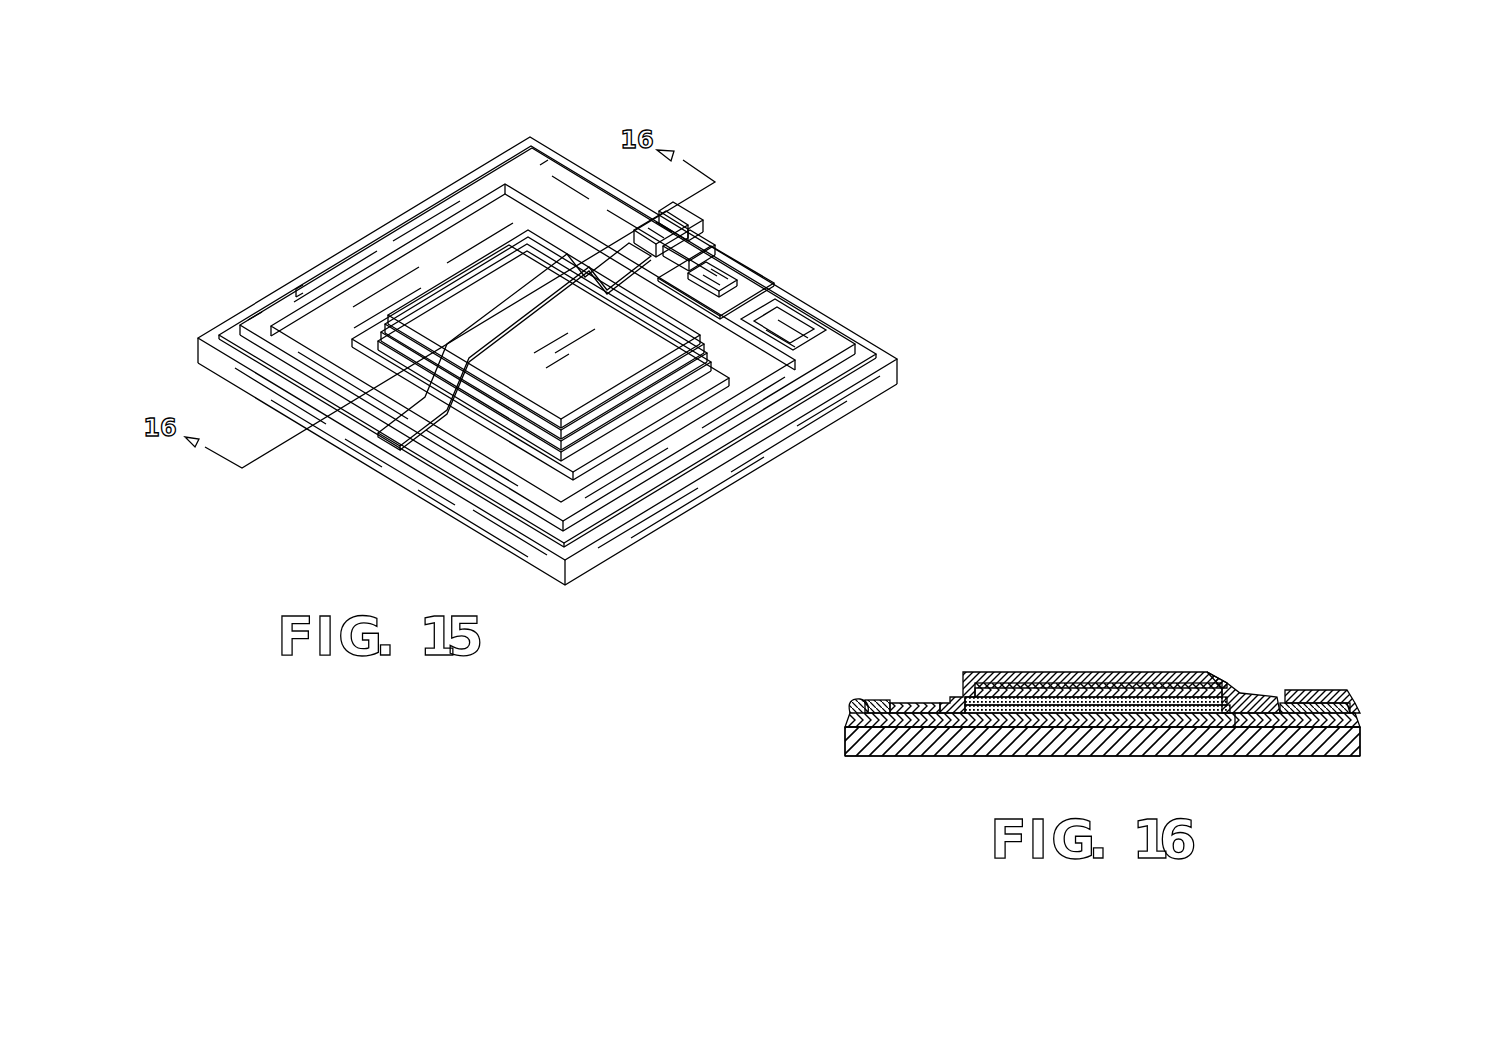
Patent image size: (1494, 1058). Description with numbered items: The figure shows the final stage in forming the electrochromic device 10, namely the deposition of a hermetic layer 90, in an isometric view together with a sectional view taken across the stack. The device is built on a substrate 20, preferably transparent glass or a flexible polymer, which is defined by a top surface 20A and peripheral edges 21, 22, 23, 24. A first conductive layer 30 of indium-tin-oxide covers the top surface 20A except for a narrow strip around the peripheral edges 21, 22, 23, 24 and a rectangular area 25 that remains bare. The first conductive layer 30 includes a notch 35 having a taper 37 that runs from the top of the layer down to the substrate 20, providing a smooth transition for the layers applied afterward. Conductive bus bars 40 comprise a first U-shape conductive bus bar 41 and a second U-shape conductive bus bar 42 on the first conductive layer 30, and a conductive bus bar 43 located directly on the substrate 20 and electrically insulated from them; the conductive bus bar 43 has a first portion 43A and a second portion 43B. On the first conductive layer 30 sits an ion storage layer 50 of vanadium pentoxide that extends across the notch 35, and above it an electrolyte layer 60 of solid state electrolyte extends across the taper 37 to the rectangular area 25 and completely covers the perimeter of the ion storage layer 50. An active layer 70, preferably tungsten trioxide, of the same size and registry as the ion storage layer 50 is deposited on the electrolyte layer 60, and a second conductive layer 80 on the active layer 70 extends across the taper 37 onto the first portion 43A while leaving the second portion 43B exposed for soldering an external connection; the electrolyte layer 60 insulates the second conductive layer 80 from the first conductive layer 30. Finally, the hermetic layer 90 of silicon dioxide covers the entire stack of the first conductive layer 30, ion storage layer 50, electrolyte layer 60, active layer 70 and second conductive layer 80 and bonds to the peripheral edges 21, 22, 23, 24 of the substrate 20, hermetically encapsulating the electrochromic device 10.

In FIG. 15, the electrochromic device 10 is at (808, 117).
In FIG. 16, the electrochromic device 10 is at (1255, 540).
In FIG. 15, the substrate 20 is at (897, 370).
In FIG. 16, the substrate 20 is at (1148, 760).
In FIG. 15, the top surface 20A is at (867, 350).
In FIG. 16, the top surface 20A is at (893, 722).
In FIG. 15, the peripheral edge 21 is at (600, 518).
In FIG. 16, the peripheral edge 21 is at (990, 740).
In FIG. 15, the peripheral edge 22 is at (523, 527).
In FIG. 16, the peripheral edge 22 is at (845, 730).
In FIG. 15, the peripheral edge 23 is at (262, 298).
In FIG. 16, the peripheral edge 24 is at (1367, 720).
In FIG. 16, the rectangular area 25 is at (1240, 725).
In FIG. 15, the first conductive layer 30 is at (463, 482).
In FIG. 16, the first conductive layer 30 is at (850, 715).
In FIG. 15, the notch 35 is at (707, 302).
In FIG. 16, the notch 35 is at (1282, 705).
In FIG. 15, the taper 37 is at (795, 266).
In FIG. 16, the taper 37 is at (1210, 715).
In FIG. 15, the conductive bus bars 40 is at (647, 458).
In FIG. 16, the conductive bus bars 40 is at (857, 699).
In FIG. 15, the first U-shape conductive bus bar 41 is at (722, 415).
In FIG. 16, the first U-shape conductive bus bar 41 is at (893, 700).
In FIG. 15, the second U-shape conductive bus bar 42 is at (268, 275).
In FIG. 15, the conductive bus bar 43 is at (713, 252).
In FIG. 16, the conductive bus bar 43 is at (1340, 690).
In FIG. 15, the first portion 43A is at (655, 205).
In FIG. 15, the second portion 43B is at (732, 252).
In FIG. 15, the ion storage layer 50 is at (238, 312).
In FIG. 16, the ion storage layer 50 is at (1018, 712).
In FIG. 15, the electrolyte layer 60 is at (327, 247).
In FIG. 16, the electrolyte layer 60 is at (1048, 705).
In FIG. 15, the active layer 70 is at (375, 208).
In FIG. 16, the active layer 70 is at (1091, 697).
In FIG. 15, the second conductive layer 80 is at (445, 217).
In FIG. 16, the second conductive layer 80 is at (1135, 684).
In FIG. 15, the hermetic layer 90 is at (518, 240).
In FIG. 16, the hermetic layer 90 is at (1187, 670).